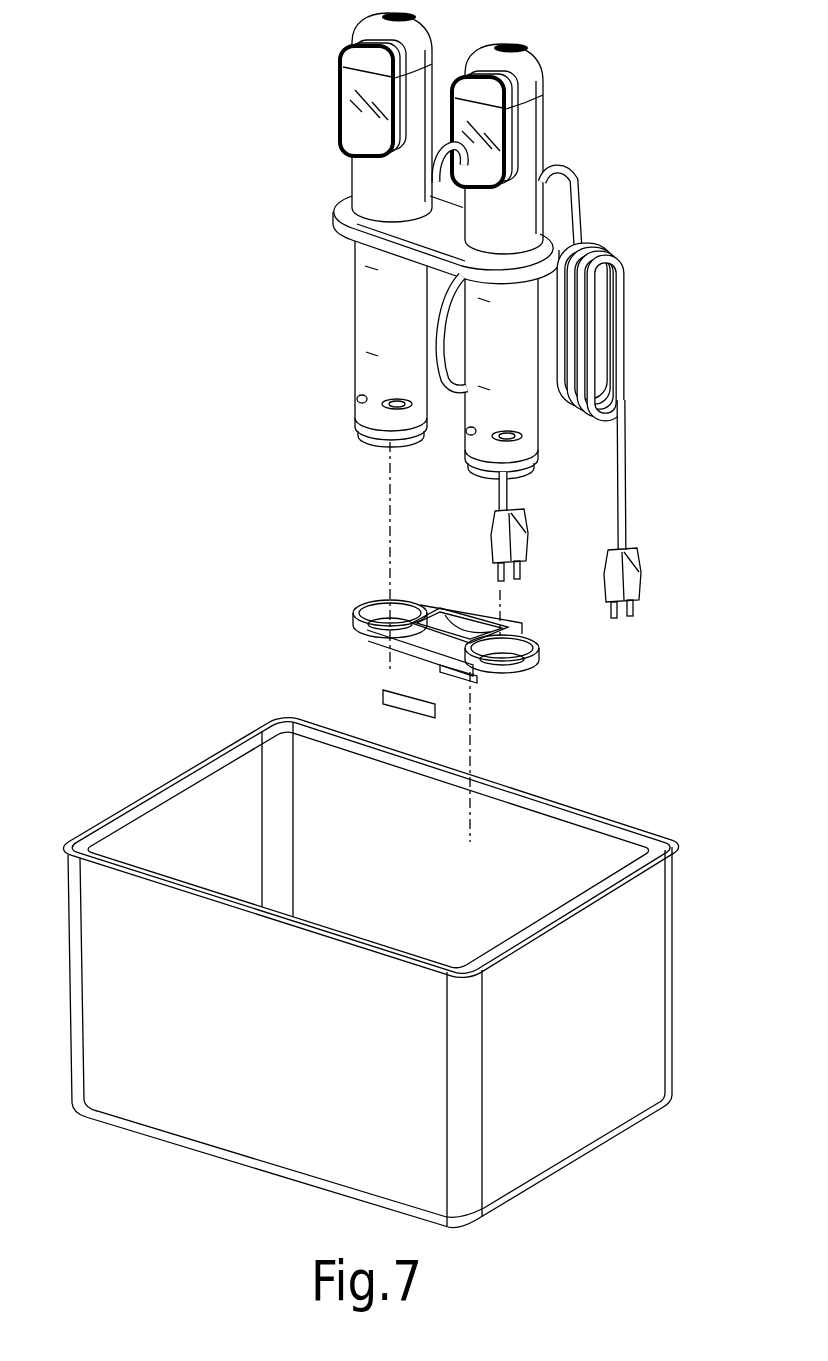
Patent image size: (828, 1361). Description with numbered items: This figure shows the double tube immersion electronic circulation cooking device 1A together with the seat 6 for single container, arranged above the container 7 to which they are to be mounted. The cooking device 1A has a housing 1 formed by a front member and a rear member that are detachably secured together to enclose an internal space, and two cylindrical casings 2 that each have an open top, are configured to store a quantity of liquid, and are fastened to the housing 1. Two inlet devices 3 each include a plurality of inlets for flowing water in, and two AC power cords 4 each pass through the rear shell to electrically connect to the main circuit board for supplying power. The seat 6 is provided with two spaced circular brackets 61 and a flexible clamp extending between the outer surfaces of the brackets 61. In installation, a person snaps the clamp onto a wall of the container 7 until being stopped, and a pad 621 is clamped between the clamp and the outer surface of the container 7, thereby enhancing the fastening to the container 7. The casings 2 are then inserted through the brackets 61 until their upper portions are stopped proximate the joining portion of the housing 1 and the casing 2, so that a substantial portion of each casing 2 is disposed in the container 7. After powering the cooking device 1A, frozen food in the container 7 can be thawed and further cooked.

The housing 1 is at (540, 134).
The double tube immersion electronic circulation cooking device 1A is at (328, 185).
The cylindrical casing 2 is at (527, 408).
The inlet device 3 is at (516, 468).
The AC power cord 4 is at (578, 181).
The seat for single container 6 is at (432, 594).
The circular bracket 61 is at (382, 625).
The pad 621 is at (383, 699).
The container 7 is at (176, 802).